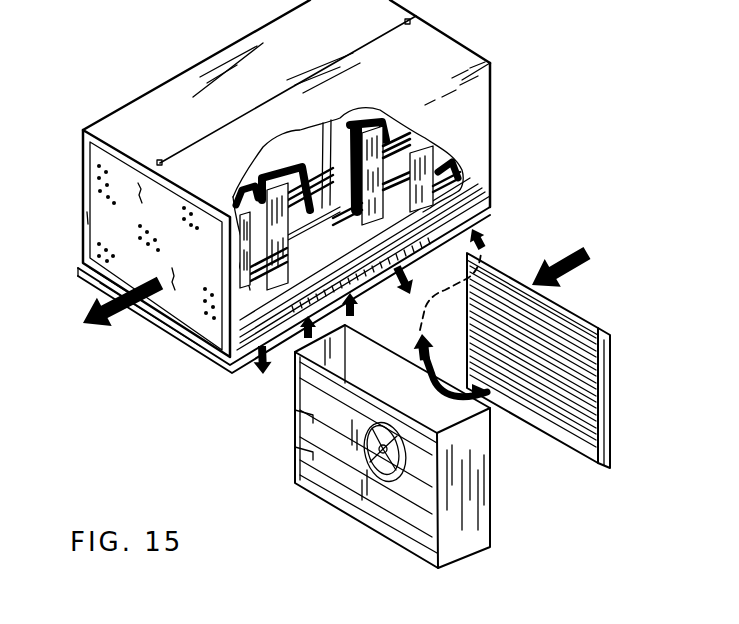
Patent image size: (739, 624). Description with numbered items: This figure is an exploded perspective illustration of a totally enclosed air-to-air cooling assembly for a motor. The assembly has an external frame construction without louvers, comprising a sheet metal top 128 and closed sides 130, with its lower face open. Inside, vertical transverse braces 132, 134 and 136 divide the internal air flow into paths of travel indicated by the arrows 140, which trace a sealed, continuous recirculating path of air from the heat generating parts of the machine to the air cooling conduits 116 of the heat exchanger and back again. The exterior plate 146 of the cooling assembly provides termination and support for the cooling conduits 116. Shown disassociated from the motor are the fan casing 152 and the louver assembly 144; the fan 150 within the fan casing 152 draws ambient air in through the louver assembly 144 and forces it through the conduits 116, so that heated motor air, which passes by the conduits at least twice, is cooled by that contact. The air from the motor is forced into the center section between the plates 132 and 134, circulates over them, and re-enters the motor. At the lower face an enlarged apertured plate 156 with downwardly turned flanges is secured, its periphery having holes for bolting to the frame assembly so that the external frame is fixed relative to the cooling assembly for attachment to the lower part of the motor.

The air cooling conduits 116 is at (325, 130).
The sheet metal top 128 is at (253, 50).
The closed sides 130 is at (482, 127).
The vertical transverse brace 132 is at (308, 150).
The vertical transverse brace 134 is at (242, 190).
The vertical transverse brace 136 is at (425, 150).
The arrows 140 is at (405, 280).
The louver assembly 144 is at (610, 353).
The exterior plate 146 is at (102, 215).
The fan 150 is at (383, 455).
The fan casing 152 is at (487, 520).
The apertured plate 156 is at (203, 342).